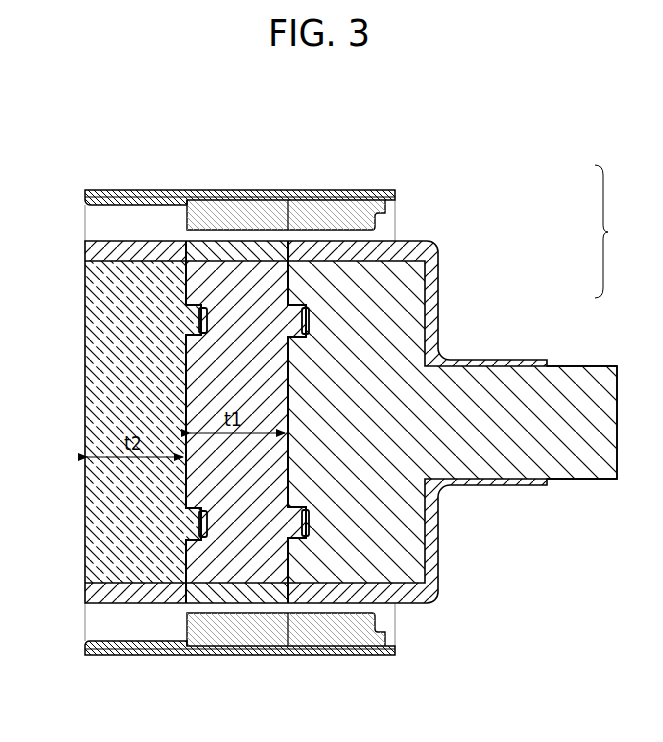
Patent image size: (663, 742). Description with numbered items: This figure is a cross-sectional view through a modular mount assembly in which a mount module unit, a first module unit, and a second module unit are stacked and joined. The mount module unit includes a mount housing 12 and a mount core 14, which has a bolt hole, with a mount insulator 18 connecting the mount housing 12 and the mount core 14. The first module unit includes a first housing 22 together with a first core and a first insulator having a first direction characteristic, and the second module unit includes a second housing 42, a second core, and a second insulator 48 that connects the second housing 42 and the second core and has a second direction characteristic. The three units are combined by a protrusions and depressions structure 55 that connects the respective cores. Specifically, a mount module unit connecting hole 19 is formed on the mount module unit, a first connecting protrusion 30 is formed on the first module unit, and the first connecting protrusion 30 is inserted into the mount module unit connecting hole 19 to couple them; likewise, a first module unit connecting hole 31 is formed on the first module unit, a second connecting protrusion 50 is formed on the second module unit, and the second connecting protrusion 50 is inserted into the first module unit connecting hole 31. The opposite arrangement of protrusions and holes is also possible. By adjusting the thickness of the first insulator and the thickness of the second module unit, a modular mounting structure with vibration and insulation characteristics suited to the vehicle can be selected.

The mount housing 12 is at (347, 657).
The mount core 14 is at (592, 473).
The mount insulator 18 is at (393, 568).
The mount module unit connecting hole 19 is at (310, 337).
The first housing 22 is at (242, 657).
The first connecting protrusion 30 is at (307, 312).
The first module unit connecting hole 31 is at (215, 312).
The second housing 42 is at (137, 657).
The second insulator 48 is at (137, 277).
The second connecting protrusion 50 is at (198, 322).
The protrusions and depressions structure 55 is at (601, 231).